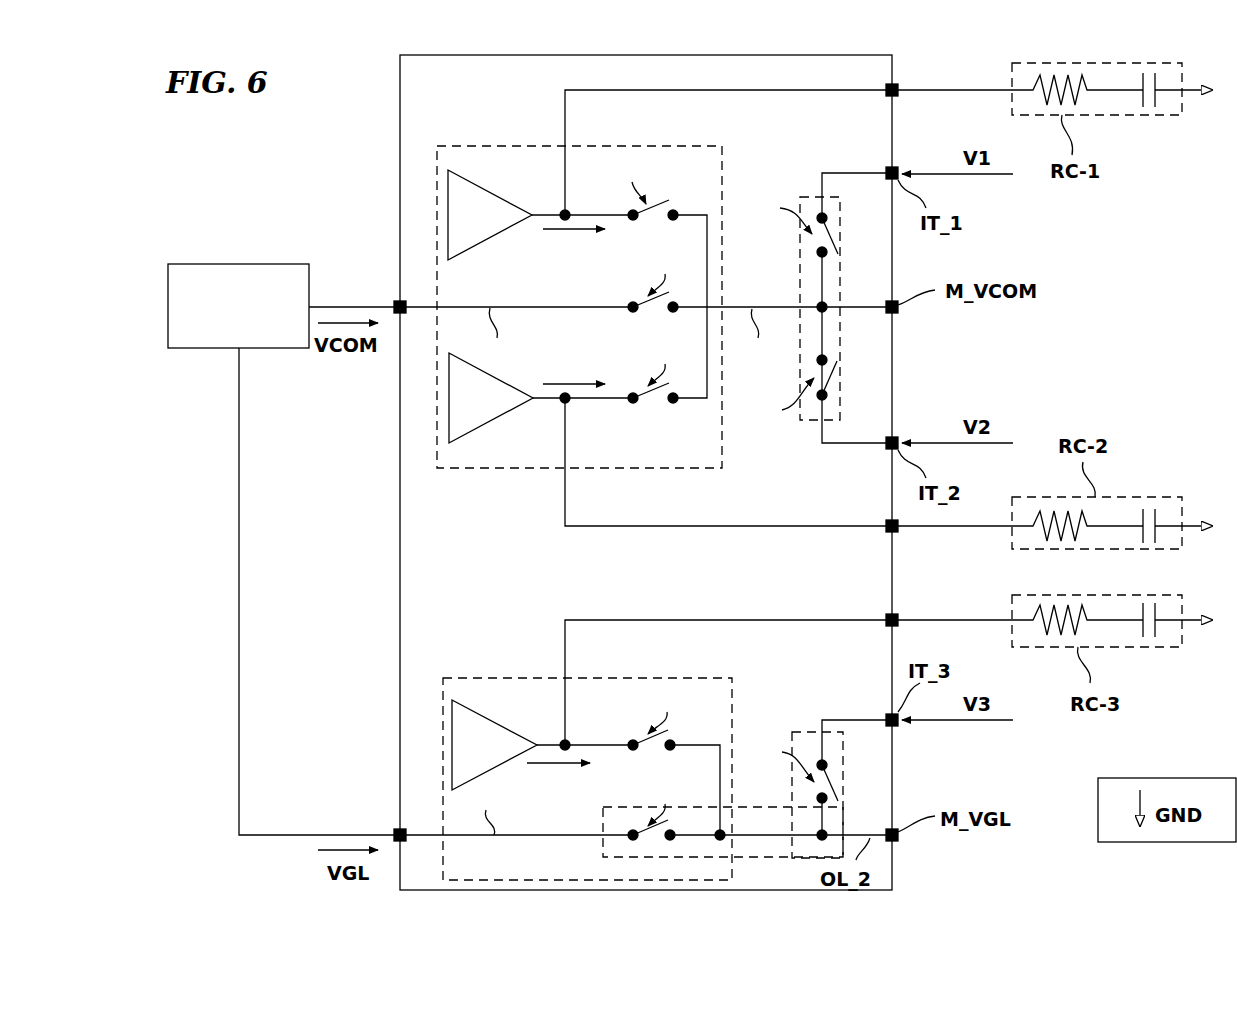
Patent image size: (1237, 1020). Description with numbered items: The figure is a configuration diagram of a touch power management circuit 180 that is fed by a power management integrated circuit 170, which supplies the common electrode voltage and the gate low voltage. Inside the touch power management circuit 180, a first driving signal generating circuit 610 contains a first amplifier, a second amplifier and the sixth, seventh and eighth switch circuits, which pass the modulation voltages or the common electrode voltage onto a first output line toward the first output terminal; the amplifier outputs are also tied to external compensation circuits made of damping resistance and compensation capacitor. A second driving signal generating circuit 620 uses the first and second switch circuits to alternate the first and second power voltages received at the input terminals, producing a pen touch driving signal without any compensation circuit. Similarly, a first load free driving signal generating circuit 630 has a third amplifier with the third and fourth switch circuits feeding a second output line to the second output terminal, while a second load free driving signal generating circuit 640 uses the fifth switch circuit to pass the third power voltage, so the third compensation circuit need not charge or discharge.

The power management integrated circuit 170 is at (182, 348).
The touch power management circuit 180 is at (400, 574).
The first driving signal generating circuit 610 is at (478, 469).
The second driving signal generating circuit 620 is at (806, 197).
The first load free driving signal generating circuit 630 is at (510, 678).
The second load free driving signal generating circuit 640 is at (810, 732).